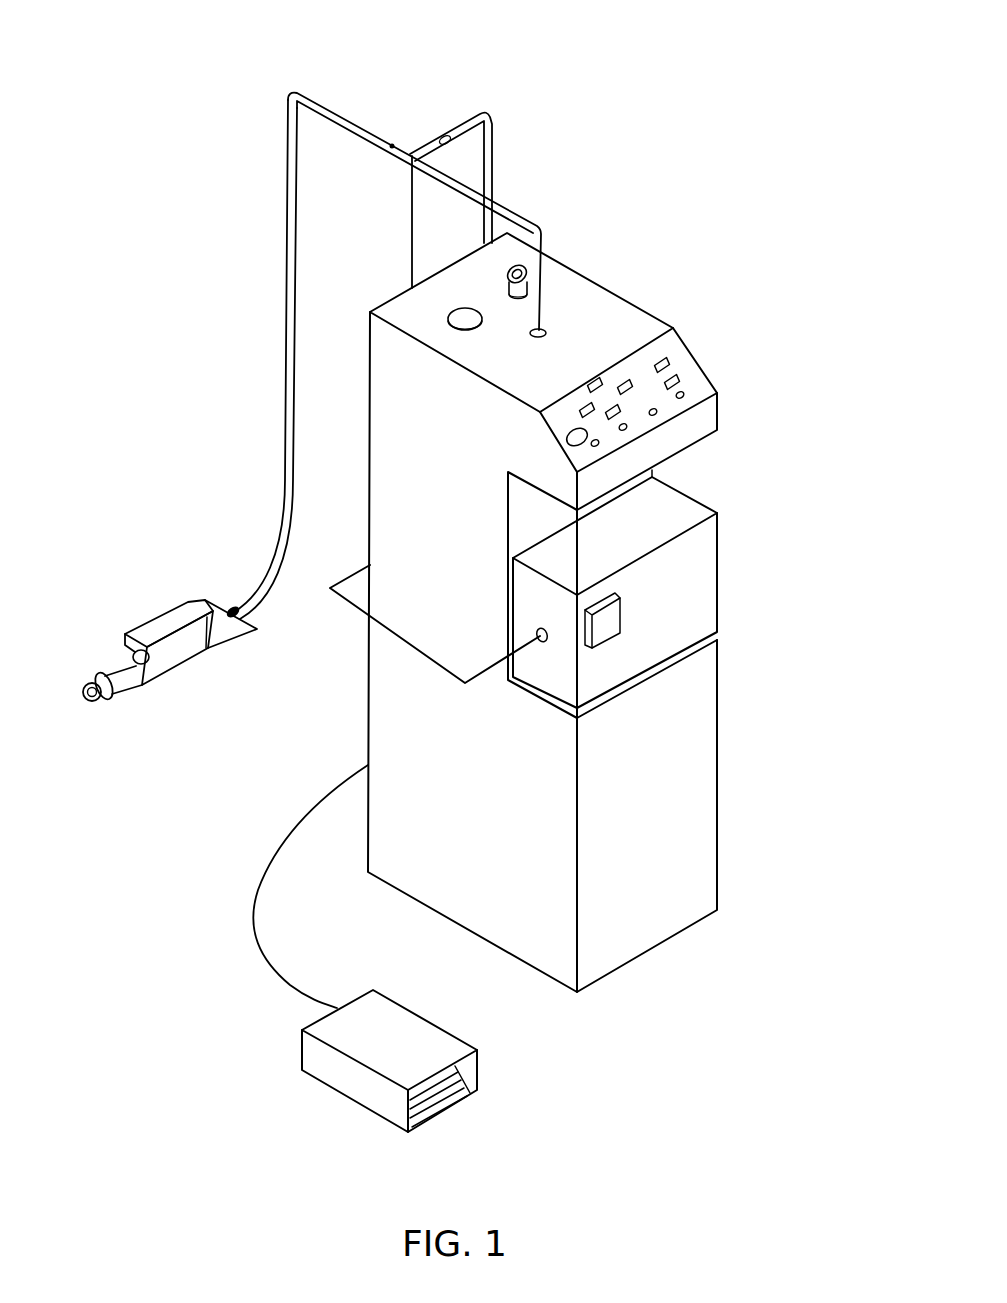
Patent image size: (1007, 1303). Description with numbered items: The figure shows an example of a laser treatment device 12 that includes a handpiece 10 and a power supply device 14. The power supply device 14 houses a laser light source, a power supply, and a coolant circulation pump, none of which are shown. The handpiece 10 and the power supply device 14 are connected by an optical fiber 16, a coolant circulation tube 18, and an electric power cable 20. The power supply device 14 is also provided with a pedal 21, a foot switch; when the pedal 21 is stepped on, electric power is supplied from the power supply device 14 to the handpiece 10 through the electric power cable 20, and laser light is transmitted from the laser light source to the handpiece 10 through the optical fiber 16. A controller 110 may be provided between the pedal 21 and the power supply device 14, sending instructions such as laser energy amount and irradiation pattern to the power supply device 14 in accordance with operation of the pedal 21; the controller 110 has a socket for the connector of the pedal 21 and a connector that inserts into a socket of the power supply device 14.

The handpiece 10 is at (167, 628).
The laser treatment device 12 is at (165, 248).
The power supply device 14 is at (753, 336).
The optical fiber 16 is at (514, 196).
The coolant circulation tube 18 is at (442, 140).
The electric power cable 20 is at (353, 604).
The pedal (foot switch) 21 is at (397, 1052).
The controller 110 is at (698, 587).